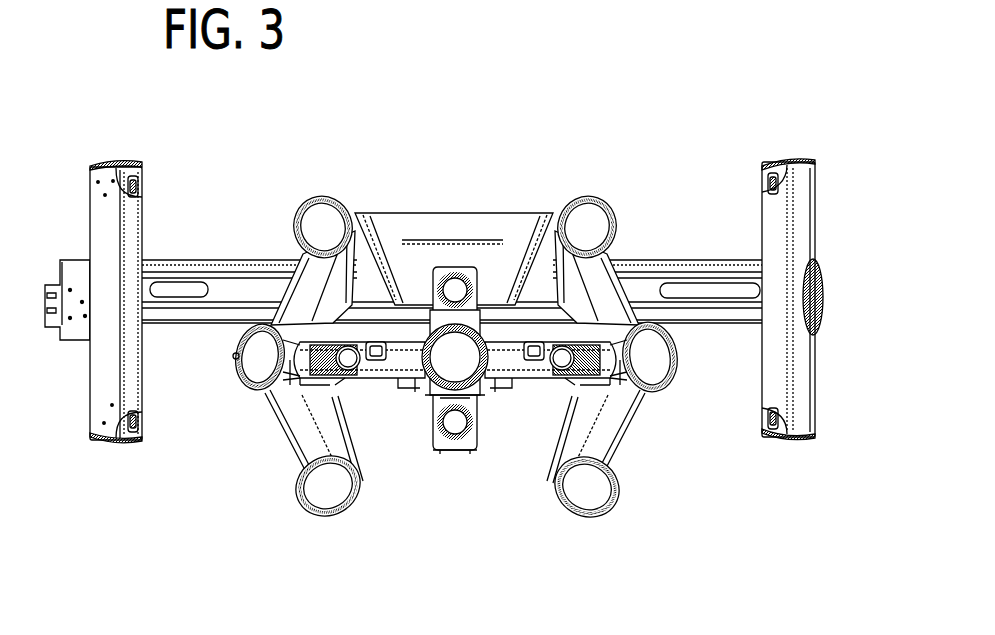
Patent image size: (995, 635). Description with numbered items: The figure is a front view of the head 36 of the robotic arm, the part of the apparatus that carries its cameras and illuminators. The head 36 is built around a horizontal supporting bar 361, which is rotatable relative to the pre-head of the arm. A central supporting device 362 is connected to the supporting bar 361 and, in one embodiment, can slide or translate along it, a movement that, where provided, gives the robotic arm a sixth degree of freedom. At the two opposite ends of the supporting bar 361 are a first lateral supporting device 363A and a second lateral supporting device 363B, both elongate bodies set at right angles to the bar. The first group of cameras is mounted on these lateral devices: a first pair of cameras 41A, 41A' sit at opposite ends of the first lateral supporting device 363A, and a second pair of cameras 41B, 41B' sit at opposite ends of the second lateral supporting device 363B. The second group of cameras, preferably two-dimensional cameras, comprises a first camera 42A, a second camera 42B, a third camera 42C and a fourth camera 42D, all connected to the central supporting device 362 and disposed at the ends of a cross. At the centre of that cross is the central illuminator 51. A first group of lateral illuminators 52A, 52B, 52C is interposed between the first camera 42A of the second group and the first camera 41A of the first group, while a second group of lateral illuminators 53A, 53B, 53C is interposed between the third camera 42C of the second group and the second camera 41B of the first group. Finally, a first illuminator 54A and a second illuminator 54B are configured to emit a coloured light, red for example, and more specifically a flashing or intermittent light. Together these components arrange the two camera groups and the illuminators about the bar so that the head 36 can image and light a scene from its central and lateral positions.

The head 36 is at (670, 131).
The supporting bar 361 is at (190, 295).
The supporting device 362 is at (425, 240).
The first lateral supporting device 363A is at (107, 387).
The second lateral supporting device 363B is at (782, 377).
The first camera 41A is at (106, 476).
The first camera 41A' is at (102, 133).
The second camera 41B is at (795, 473).
The second camera 41B' is at (797, 139).
The central illuminator 51 is at (445, 368).
The first camera 42A is at (370, 380).
The second camera 42B is at (545, 378).
The third camera 42C is at (457, 423).
The fourth camera 42D is at (455, 284).
The illuminator 52A is at (318, 228).
The illuminator 52B is at (235, 360).
The illuminator 52C is at (297, 487).
The illuminator 53A is at (585, 218).
The illuminator 53B is at (653, 360).
The illuminator 53C is at (610, 496).
The first illuminator 54A is at (377, 342).
The second illuminator 54B is at (532, 342).